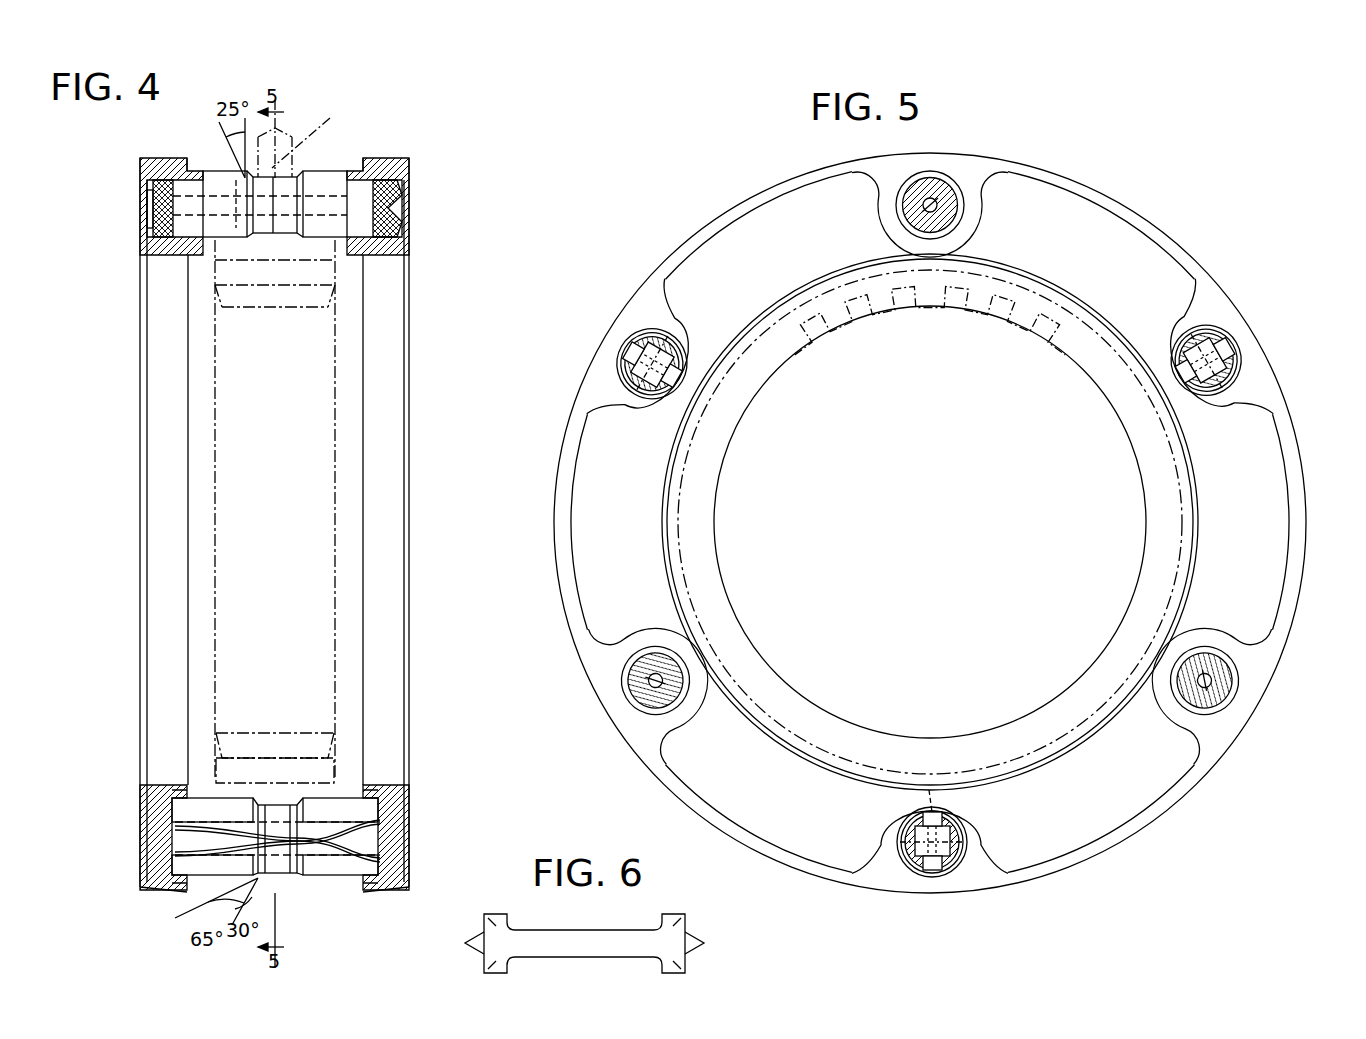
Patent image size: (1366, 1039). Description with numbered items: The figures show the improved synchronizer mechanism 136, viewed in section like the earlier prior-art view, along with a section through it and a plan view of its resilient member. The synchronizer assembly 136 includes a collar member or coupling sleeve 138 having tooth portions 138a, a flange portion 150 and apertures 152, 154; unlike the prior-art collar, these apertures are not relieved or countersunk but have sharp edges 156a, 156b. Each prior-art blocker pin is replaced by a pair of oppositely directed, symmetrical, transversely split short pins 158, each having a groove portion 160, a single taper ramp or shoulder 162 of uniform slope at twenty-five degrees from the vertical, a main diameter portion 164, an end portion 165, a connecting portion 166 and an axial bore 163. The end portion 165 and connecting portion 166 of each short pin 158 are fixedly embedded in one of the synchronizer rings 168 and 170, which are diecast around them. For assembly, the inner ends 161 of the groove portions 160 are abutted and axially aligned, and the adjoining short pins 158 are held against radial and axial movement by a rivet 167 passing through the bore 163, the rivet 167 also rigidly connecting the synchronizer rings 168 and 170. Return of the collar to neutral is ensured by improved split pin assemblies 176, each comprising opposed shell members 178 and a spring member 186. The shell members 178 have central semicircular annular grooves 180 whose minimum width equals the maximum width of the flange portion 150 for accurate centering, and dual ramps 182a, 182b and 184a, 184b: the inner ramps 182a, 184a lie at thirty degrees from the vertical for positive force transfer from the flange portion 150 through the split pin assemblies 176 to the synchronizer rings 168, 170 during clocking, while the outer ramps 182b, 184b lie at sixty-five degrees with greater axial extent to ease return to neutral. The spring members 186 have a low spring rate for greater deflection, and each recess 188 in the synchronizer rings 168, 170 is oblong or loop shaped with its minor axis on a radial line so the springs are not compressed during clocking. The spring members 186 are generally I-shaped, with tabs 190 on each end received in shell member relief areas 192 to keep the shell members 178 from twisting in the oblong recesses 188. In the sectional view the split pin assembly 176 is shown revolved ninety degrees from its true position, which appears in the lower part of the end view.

In FIG. 4, the improved synchronizer mechanism 136 is at (150, 892).
In FIG. 4, the collar member 138 is at (282, 283).
In FIG. 4, the tooth portions 138a is at (262, 300).
In FIG. 4, the flange portion 150 is at (297, 127).
In FIG. 4, the aperture 152 is at (302, 140).
In FIG. 4, the aperture 154 is at (300, 800).
In FIG. 4, the sharp edge 156a is at (225, 204).
In FIG. 4, the sharp edge 156b is at (325, 204).
In FIG. 4, the short pin 158 is at (210, 164).
In FIG. 5, the short pin 158 is at (896, 210).
In FIG. 4, the groove portion 160 is at (286, 236).
In FIG. 4, the inner end 161 is at (268, 230).
In FIG. 4, the single taper ramp 162 is at (233, 245).
In FIG. 5, the single taper ramp 162 is at (962, 204).
In FIG. 4, the axial bore 163 is at (360, 244).
In FIG. 4, the main diameter portion 164 is at (210, 236).
In FIG. 4, the end portion 165 is at (150, 188).
In FIG. 4, the connecting portion 166 is at (162, 236).
In FIG. 4, the rivet 167 is at (385, 203).
In FIG. 5, the rivet 167 is at (922, 214).
In FIG. 4, the synchronizer ring 168 is at (165, 349).
In FIG. 5, the synchronizer ring 168 is at (1160, 268).
In FIG. 4, the synchronizer ring 170 is at (385, 370).
In FIG. 4, the split pin assembly 176 is at (170, 934).
In FIG. 4, the shell member 178 is at (200, 812).
In FIG. 5, the shell member 178 is at (668, 344).
In FIG. 4, the central semicircular annular groove 180 is at (283, 806).
In FIG. 4, the inner ramp 182a is at (268, 803).
In FIG. 5, the inner ramp 182a is at (906, 862).
In FIG. 4, the outer ramp 182b is at (262, 804).
In FIG. 5, the outer ramp 182b is at (906, 822).
In FIG. 4, the inner ramp 184a is at (297, 880).
In FIG. 4, the outer ramp 184b is at (300, 878).
In FIG. 4, the spring member 186 is at (185, 852).
In FIG. 5, the spring member 186 is at (937, 870).
In FIG. 6, the spring member 186 is at (568, 945).
In FIG. 4, the recess 188 is at (172, 790).
In FIG. 5, the recess 188 is at (634, 410).
In FIG. 5, the tab 190 is at (934, 787).
In FIG. 6, the tab 190 is at (587, 943).
In FIG. 4, the relief area 192 is at (385, 862).